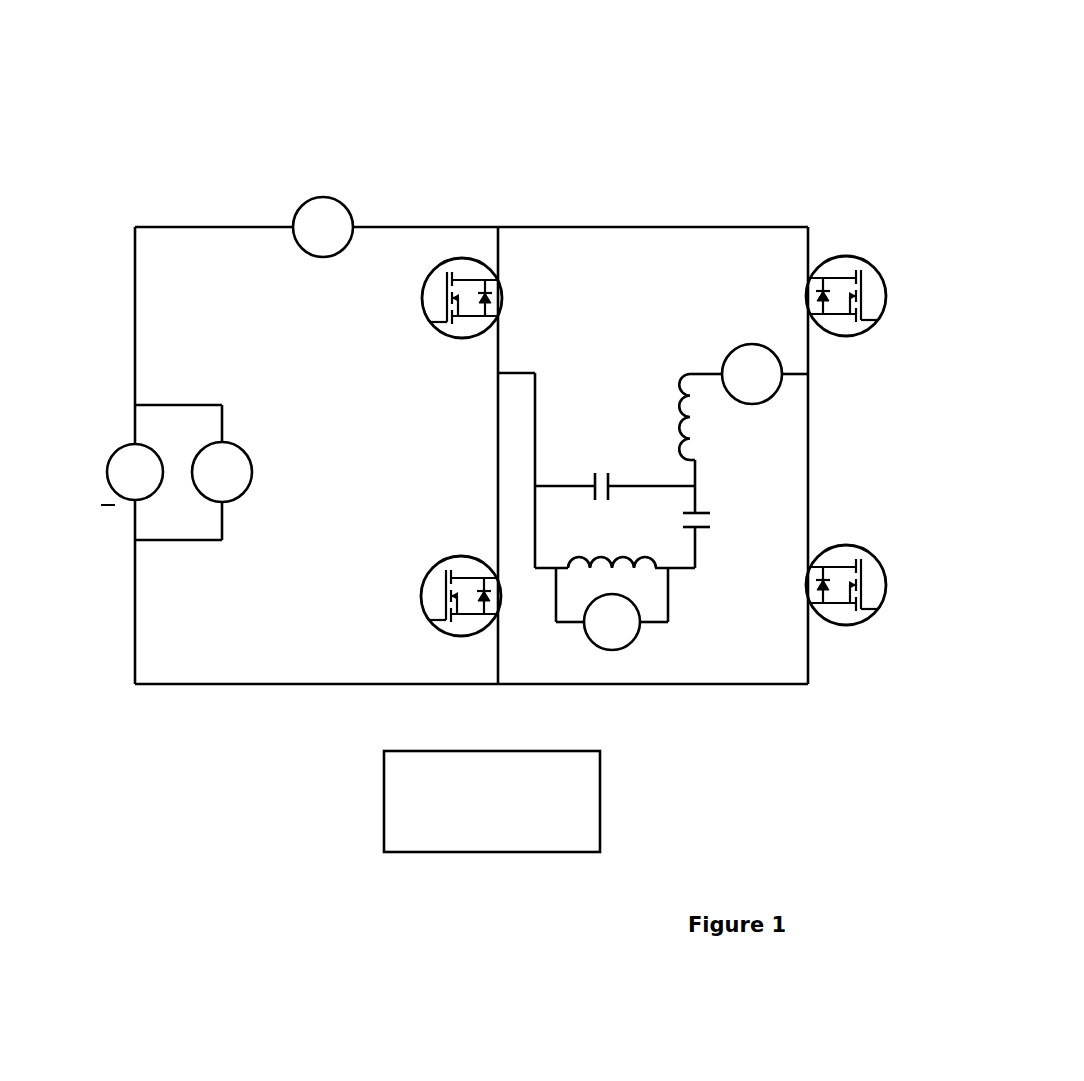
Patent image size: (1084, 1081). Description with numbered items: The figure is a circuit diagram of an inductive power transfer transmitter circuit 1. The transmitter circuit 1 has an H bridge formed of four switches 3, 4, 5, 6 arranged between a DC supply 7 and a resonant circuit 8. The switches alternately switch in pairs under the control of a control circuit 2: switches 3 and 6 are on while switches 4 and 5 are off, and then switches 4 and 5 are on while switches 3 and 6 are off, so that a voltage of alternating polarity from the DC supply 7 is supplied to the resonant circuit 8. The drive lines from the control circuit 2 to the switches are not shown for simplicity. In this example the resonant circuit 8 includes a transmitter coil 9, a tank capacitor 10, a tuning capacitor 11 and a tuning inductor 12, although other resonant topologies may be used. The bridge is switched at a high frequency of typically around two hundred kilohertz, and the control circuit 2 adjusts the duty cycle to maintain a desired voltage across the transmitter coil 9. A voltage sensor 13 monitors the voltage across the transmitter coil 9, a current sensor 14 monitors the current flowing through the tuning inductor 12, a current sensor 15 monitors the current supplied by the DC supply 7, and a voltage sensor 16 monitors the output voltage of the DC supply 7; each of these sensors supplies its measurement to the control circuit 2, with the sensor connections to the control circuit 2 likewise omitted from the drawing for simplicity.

The transmitter circuit 1 is at (455, 75).
The control circuit 2 is at (600, 802).
The switch 3 is at (423, 299).
The switch 4 is at (887, 298).
The switch 5 is at (421, 596).
The switch 6 is at (887, 587).
The DC supply 7 is at (107, 473).
The resonant circuit 8 is at (603, 350).
The transmitter coil 9 is at (630, 553).
The tank capacitor 10 is at (596, 475).
The tuning capacitor 11 is at (711, 527).
The tuning inductor 12 is at (689, 372).
The voltage sensor 13 is at (612, 650).
The current sensor 14 is at (752, 344).
The current sensor 15 is at (319, 197).
The voltage sensor 16 is at (252, 472).